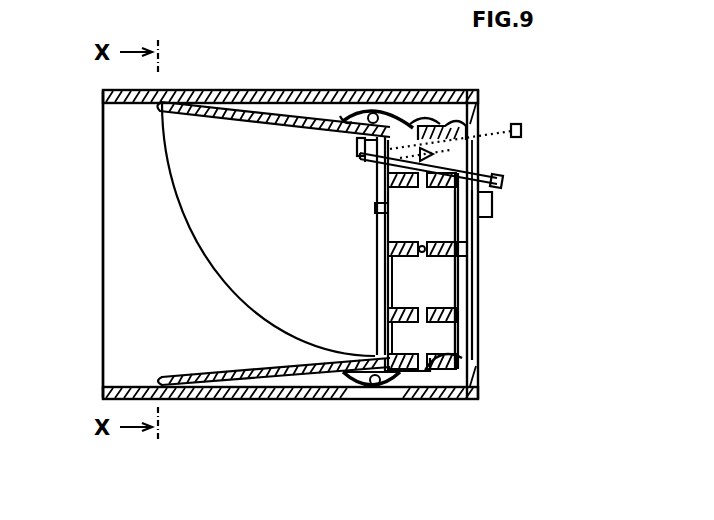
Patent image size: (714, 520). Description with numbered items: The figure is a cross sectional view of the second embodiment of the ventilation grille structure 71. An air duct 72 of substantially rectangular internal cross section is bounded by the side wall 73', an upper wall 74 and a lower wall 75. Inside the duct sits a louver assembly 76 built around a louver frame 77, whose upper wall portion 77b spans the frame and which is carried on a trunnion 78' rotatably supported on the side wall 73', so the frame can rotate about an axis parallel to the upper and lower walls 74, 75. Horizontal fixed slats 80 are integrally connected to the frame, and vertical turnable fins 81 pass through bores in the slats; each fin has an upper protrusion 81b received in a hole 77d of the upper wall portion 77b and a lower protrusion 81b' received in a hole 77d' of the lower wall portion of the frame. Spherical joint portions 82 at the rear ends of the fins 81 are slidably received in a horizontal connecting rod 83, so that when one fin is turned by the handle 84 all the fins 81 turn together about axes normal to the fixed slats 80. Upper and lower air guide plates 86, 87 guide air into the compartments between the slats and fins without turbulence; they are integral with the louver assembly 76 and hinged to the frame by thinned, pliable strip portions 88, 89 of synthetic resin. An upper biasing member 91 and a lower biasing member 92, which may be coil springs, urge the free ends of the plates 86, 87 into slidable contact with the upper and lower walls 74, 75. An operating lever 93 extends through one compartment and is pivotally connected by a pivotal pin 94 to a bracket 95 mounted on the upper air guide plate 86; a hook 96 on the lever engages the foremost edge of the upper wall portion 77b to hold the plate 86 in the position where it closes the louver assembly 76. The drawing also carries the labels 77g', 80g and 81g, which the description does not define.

The ventilation grille structure 71 is at (318, 402).
The air duct 72 is at (142, 92).
The side wall 73' is at (76, 244).
The upper wall 74 is at (281, 91).
The lower wall 75 is at (259, 401).
The louver assembly 76 is at (372, 279).
The louver frame 77 is at (474, 99).
The upper wall portion 77b is at (421, 121).
The hole 77d is at (465, 143).
The hole 77d' is at (480, 361).
The rear wall guide 77g' is at (497, 248).
The trunnion 78' is at (423, 254).
The horizontal fixed slat 80 is at (474, 312).
The plate guide 80g is at (418, 308).
The vertical turnable fin 81 is at (448, 281).
The upper protrusion 81b is at (448, 97).
The lower protrusion 81b' is at (419, 397).
The plate guide 81g is at (420, 361).
The spherical joint portion 82 is at (379, 215).
The horizontal connecting rod 83 is at (376, 206).
The handle 84 is at (494, 209).
The upper air guide plate 86 is at (252, 119).
The lower air guide plate 87 is at (199, 377).
The strip portion 88 is at (388, 124).
The strip portion 89 is at (377, 360).
The upper biasing member 91 is at (344, 114).
The lower biasing member 92 is at (356, 388).
The operating lever 93 is at (504, 184).
The pivotal pin 94 is at (360, 160).
The bracket 95 is at (356, 148).
The hook 96 is at (462, 167).